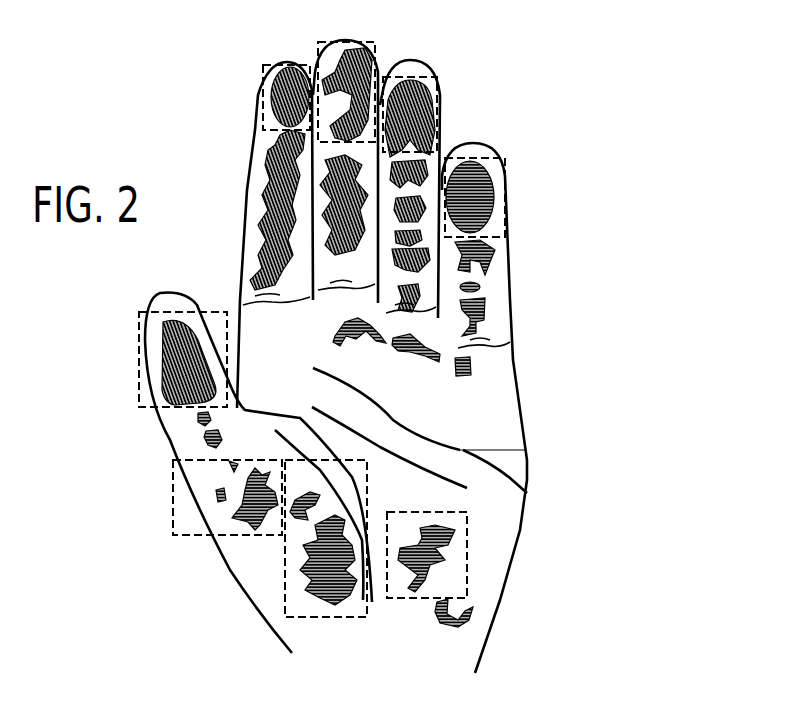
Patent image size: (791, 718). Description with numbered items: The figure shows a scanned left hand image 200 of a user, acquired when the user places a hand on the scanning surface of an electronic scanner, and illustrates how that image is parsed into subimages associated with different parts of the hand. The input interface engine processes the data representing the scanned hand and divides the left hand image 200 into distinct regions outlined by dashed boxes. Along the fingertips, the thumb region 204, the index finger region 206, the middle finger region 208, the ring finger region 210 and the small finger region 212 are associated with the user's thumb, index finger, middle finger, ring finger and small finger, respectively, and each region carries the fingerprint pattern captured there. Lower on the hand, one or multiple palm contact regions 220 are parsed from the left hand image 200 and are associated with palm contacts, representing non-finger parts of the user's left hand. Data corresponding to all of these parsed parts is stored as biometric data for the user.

The left hand image 200 is at (557, 186).
The thumb region 204 is at (138, 365).
The index finger region 206 is at (262, 86).
The middle finger region 208 is at (352, 44).
The ring finger region 210 is at (408, 77).
The small finger region 212 is at (470, 160).
The palm contact regions 220 is at (172, 500).